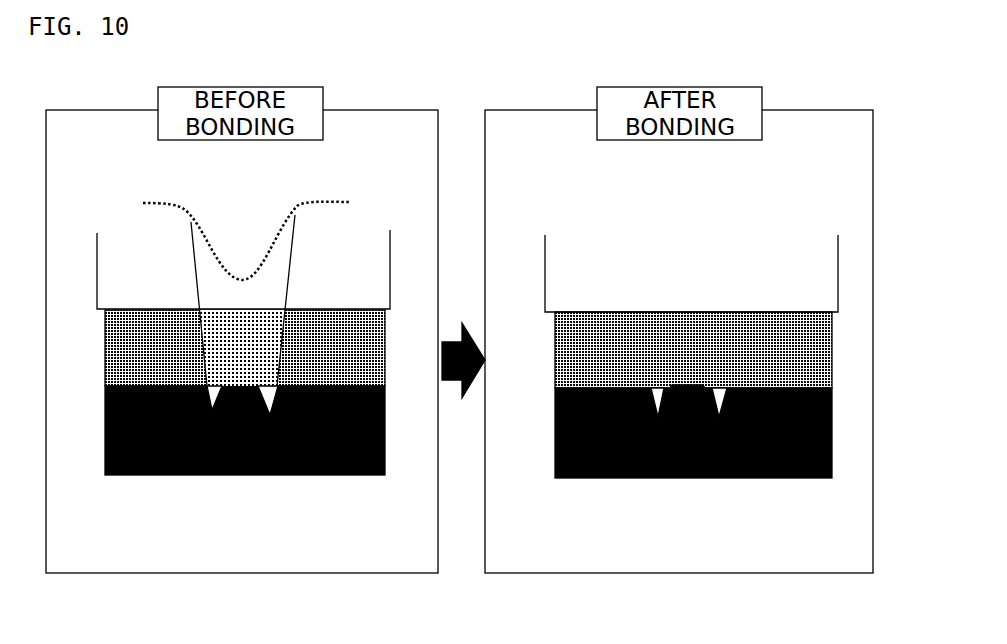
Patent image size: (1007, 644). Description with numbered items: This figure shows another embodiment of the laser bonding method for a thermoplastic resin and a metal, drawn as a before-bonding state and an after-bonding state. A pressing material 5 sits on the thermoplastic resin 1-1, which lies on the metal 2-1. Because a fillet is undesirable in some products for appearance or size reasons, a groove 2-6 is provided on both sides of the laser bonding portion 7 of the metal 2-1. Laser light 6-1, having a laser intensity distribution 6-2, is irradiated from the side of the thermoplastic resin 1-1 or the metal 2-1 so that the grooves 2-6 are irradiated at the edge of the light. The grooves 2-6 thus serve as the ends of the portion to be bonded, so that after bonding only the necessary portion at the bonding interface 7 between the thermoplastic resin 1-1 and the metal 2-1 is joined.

The pressing material 5 is at (453, 232).
The thermoplastic resin 1-1 is at (440, 348).
The metal 2-1 is at (468, 475).
The groove 2-6 is at (393, 475).
The laser light 6-1 is at (306, 279).
The laser intensity distribution 6-2 is at (271, 206).
The bonding interface 7 is at (662, 292).